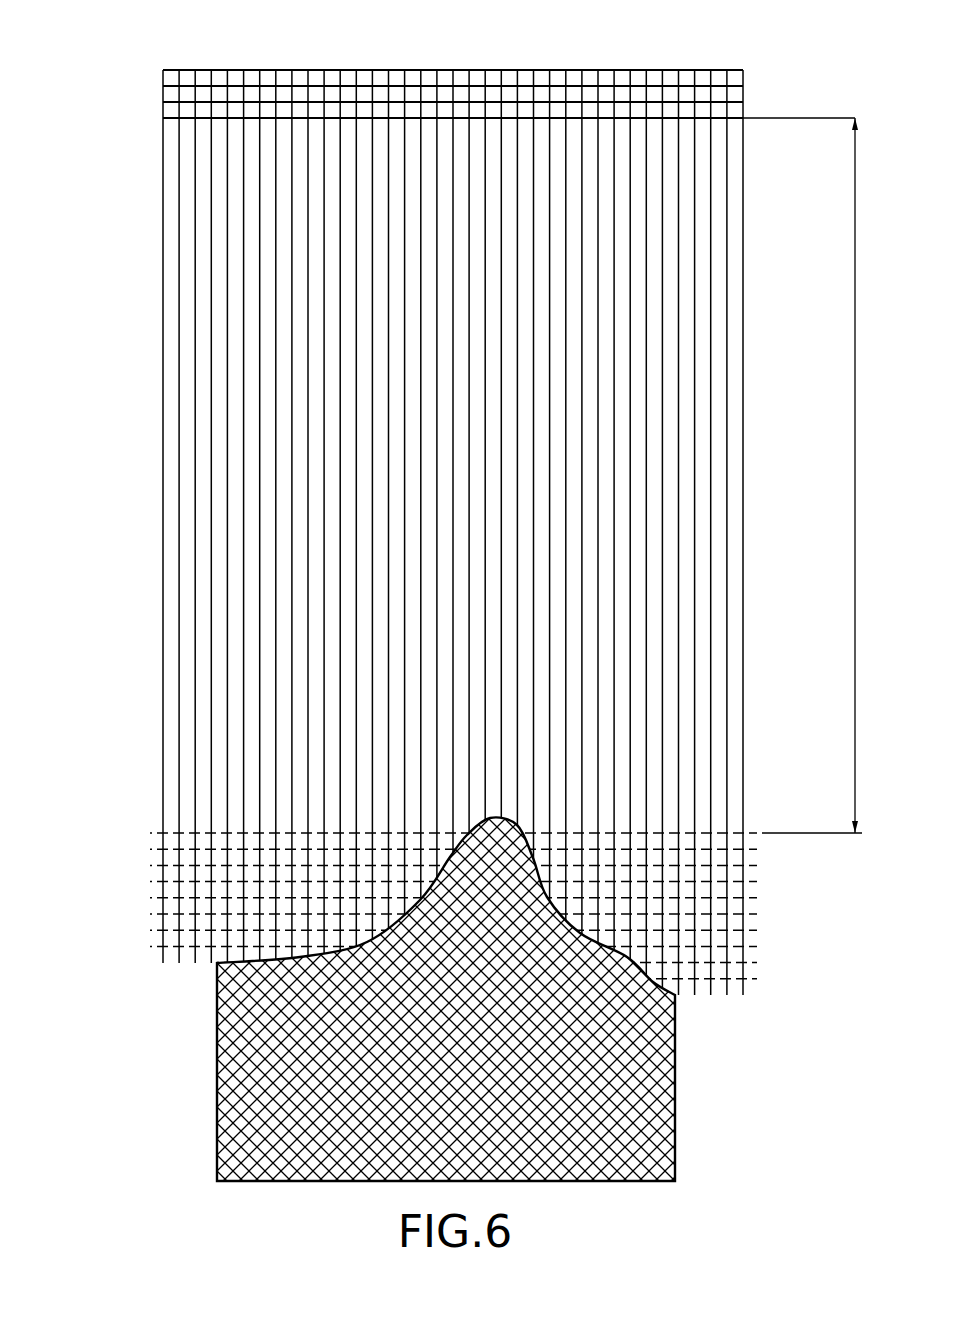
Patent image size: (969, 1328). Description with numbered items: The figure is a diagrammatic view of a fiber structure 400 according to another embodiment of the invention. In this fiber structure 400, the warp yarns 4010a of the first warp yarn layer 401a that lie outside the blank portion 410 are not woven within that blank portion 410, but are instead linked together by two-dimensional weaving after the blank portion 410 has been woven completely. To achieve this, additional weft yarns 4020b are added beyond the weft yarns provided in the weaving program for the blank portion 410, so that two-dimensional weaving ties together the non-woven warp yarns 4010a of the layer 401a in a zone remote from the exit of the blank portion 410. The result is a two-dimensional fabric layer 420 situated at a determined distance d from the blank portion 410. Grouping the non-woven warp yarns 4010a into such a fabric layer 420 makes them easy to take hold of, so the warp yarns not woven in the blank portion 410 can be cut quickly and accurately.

The fiber structure 400 is at (102, 64).
The two-dimensional fabric layer 420 is at (317, 90).
The first warp yarn layer 401a is at (234, 200).
The additional weft yarns 4020b is at (743, 70).
The warp yarns 4010a is at (710, 213).
The blank portion 410 is at (623, 1082).
The distance d is at (855, 477).